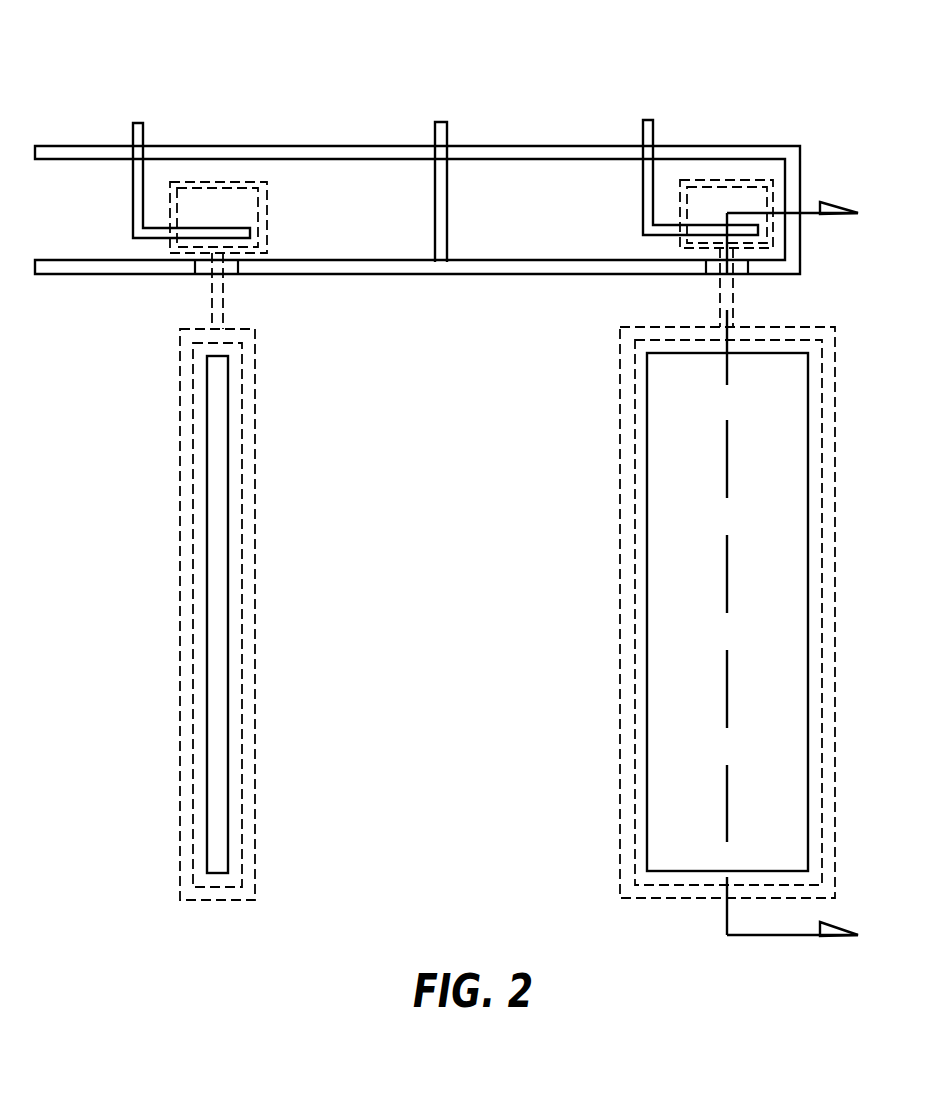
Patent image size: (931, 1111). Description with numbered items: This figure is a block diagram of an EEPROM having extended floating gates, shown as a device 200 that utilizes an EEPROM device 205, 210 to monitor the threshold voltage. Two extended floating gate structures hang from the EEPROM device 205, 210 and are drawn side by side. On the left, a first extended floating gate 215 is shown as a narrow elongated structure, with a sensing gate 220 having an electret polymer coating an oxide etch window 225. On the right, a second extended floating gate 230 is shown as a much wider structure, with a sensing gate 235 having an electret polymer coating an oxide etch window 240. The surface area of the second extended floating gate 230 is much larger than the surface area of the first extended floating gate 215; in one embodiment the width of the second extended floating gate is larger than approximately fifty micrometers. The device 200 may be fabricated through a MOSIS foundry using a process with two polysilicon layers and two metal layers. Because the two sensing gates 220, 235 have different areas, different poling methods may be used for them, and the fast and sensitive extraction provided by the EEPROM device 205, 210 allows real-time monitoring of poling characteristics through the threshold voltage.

The device 200 is at (773, 65).
The EEPROM device 205 is at (205, 270).
The EEPROM device 210 is at (738, 267).
The first extended floating gate 215 is at (180, 433).
The sensing gate 220 is at (193, 520).
The oxide etch window 225 is at (207, 606).
The second extended floating gate 230 is at (835, 430).
The sensing gate 235 is at (822, 517).
The oxide etch window 240 is at (808, 608).